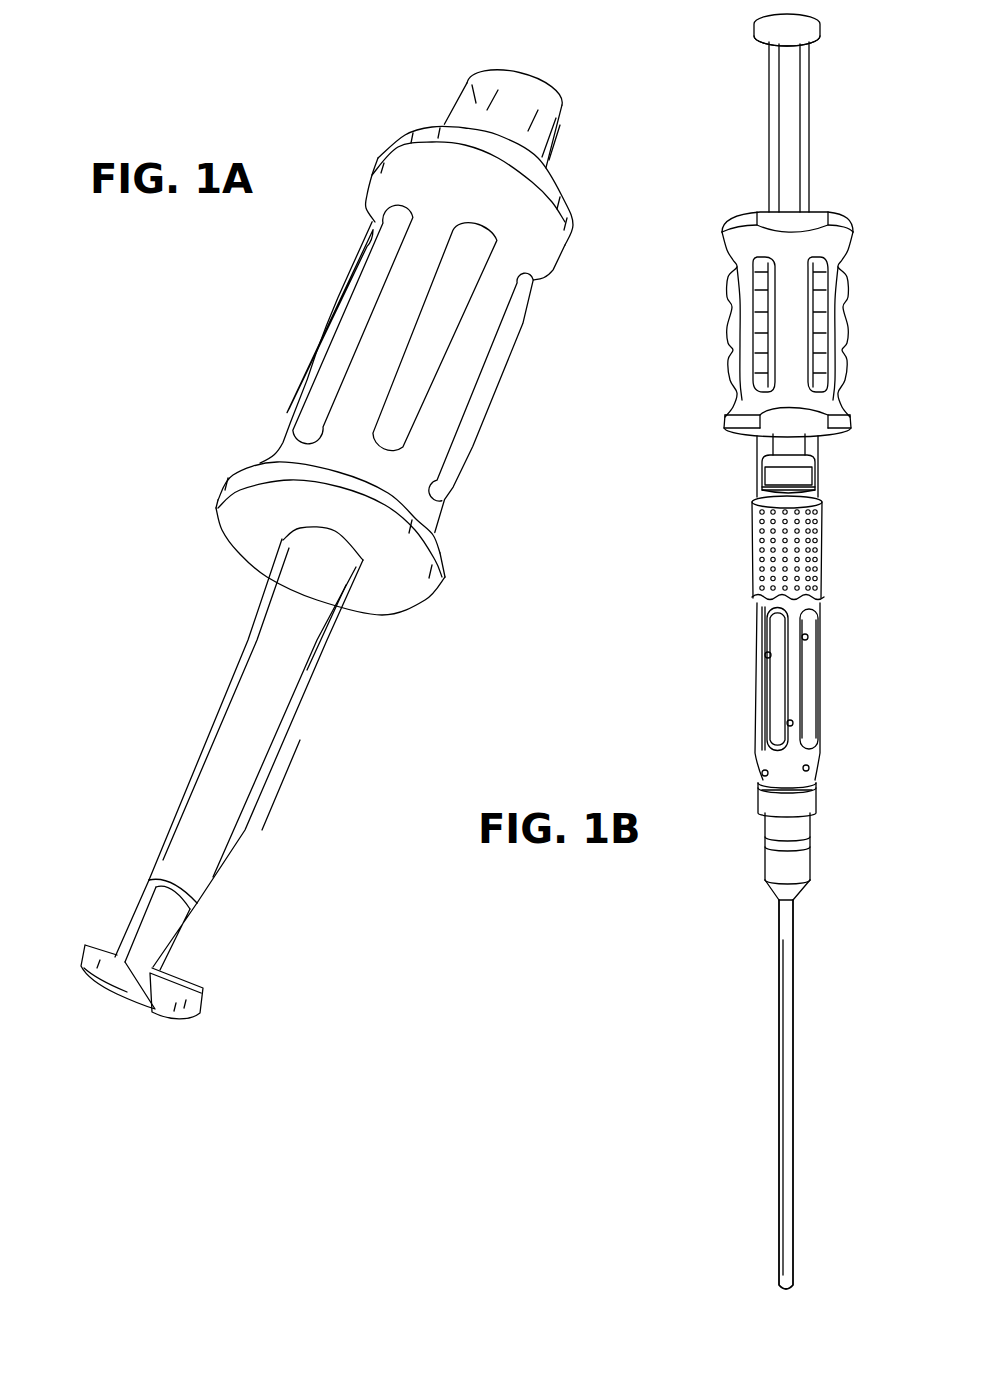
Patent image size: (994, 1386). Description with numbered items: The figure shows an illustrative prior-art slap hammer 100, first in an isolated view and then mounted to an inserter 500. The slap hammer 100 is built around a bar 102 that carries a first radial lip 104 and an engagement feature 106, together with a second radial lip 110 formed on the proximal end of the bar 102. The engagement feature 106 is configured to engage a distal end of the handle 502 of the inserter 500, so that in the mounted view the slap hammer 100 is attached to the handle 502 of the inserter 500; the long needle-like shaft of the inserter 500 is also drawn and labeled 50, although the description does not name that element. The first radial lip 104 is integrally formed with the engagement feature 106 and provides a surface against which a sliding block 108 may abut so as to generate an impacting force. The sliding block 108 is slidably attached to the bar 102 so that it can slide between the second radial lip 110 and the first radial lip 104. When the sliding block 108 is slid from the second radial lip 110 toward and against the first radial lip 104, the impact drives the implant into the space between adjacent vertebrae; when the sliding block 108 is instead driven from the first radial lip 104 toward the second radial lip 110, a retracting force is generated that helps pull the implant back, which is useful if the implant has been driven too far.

In FIG. 1A, the slap hammer 100 is at (633, 97).
In FIG. 1A, the bar 102 is at (284, 729).
In FIG. 1A, the first radial lip 104 is at (550, 167).
In FIG. 1B, the first radial lip 104 is at (823, 443).
In FIG. 1A, the engagement feature 106 is at (463, 103).
In FIG. 1B, the engagement feature 106 is at (753, 448).
In FIG. 1A, the sliding block 108 is at (513, 353).
In FIG. 1B, the sliding block 108 is at (842, 260).
In FIG. 1A, the second radial lip 110 is at (203, 987).
In FIG. 1B, the inserter 500 is at (712, 707).
In FIG. 1B, the handle 502 is at (852, 603).
In FIG. 1B, the needle 50 is at (794, 1023).